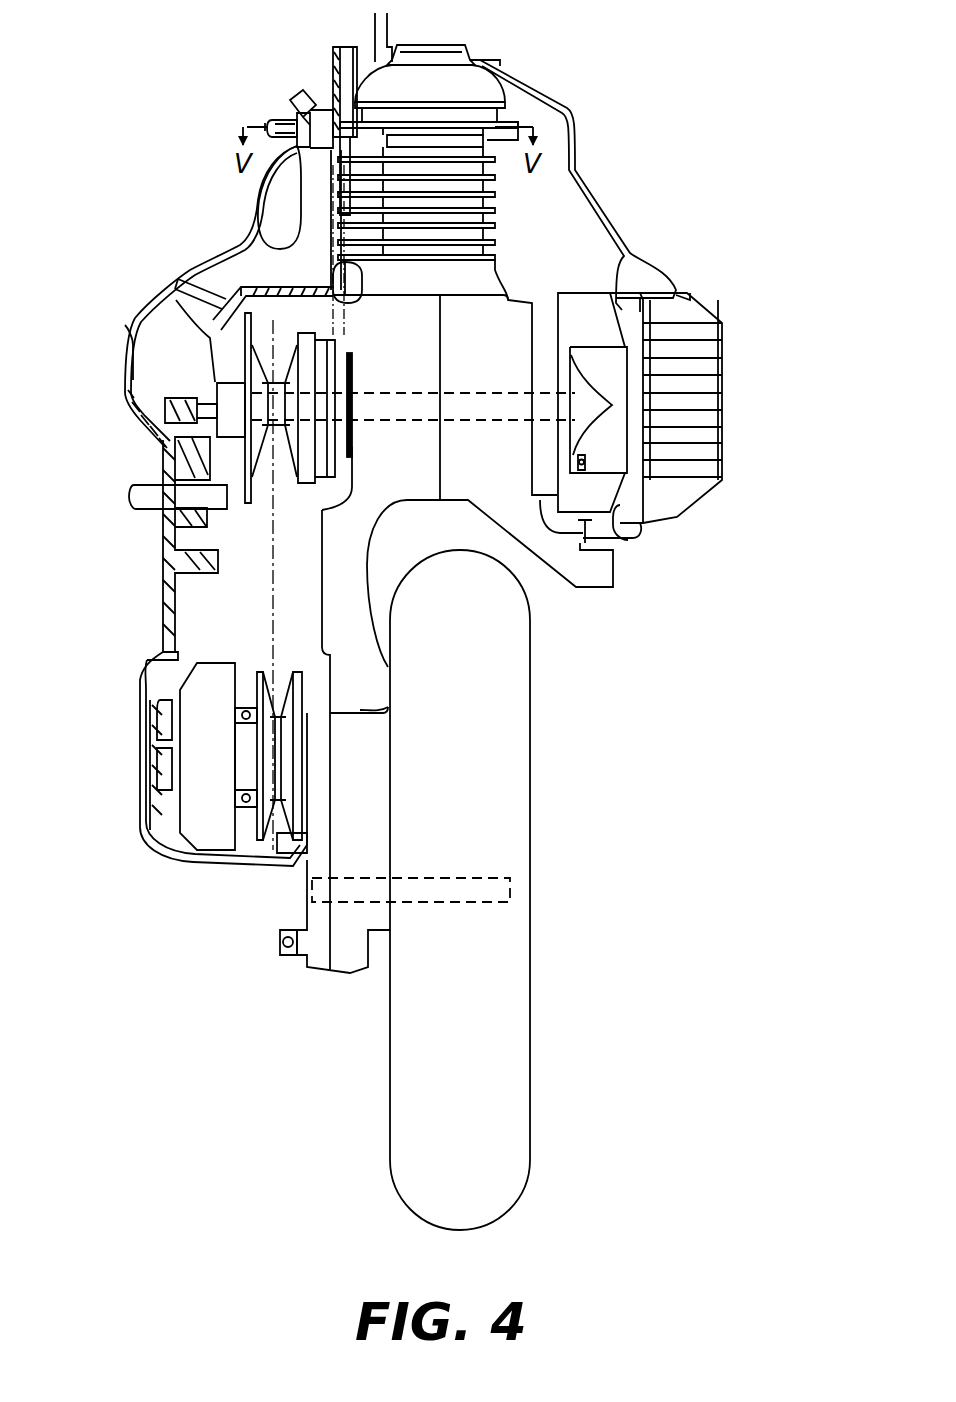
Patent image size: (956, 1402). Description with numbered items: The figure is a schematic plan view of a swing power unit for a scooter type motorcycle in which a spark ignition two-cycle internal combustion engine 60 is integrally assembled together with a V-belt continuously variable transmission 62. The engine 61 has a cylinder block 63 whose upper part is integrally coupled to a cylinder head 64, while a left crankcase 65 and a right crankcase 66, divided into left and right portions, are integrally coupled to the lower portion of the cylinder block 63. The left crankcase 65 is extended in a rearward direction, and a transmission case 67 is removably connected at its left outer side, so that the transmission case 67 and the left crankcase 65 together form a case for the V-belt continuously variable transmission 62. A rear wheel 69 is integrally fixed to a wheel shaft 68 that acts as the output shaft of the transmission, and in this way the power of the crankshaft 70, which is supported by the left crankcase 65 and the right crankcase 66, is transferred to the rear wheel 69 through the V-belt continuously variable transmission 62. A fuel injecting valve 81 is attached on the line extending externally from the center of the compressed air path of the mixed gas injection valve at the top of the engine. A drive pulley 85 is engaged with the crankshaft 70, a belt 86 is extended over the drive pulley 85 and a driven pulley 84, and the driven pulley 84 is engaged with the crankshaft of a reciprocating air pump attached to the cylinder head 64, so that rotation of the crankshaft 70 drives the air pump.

The spark ignition two-cycle internal combustion engine 60 is at (212, 228).
The engine 61 is at (563, 258).
The V-belt continuously variable transmission 62 is at (213, 628).
The cylinder block 63 is at (470, 233).
The cylinder head 64 is at (462, 163).
The left crankcase 65 is at (360, 528).
The right crankcase 66 is at (470, 487).
The transmission case 67 is at (160, 558).
The wheel shaft 68 is at (500, 890).
The rear wheel 69 is at (510, 755).
The crankshaft 70 is at (382, 407).
The fuel injecting valve 81 is at (295, 100).
The driven pulley 84 is at (315, 158).
The drive pulley 85 is at (344, 362).
The belt 86 is at (352, 288).